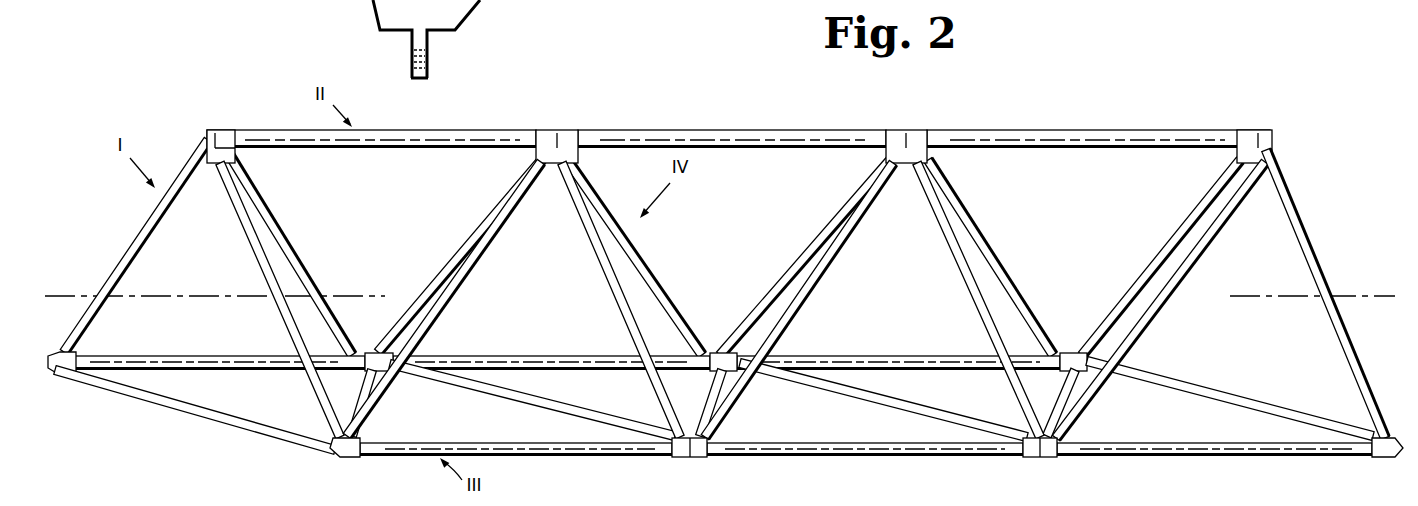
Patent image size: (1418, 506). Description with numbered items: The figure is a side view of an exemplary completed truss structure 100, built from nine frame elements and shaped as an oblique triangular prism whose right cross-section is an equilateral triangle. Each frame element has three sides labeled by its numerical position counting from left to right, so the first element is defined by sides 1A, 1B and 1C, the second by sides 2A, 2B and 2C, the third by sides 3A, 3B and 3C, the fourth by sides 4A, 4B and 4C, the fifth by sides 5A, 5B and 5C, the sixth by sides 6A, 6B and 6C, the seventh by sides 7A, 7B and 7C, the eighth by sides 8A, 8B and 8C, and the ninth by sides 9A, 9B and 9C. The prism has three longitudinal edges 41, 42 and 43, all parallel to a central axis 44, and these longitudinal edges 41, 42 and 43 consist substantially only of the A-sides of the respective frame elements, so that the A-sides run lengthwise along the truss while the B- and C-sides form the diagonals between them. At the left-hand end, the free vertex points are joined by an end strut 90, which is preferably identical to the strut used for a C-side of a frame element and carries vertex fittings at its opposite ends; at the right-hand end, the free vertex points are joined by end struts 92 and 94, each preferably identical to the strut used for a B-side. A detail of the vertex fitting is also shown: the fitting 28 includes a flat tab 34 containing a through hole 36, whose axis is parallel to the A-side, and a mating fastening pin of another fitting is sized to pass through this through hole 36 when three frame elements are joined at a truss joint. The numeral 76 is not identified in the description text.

The A-side of first frame element 1A is at (238, 356).
The B-side of first frame element 1B is at (135, 228).
The C-side of first frame element 1C is at (298, 246).
The A-side of second frame element 2A is at (395, 130).
The B-side of second frame element 2B is at (246, 245).
The C-side of second frame element 2C is at (470, 292).
The A-side of third frame element 3A is at (546, 456).
The B-side of third frame element 3B is at (357, 401).
The C-side of third frame element 3C is at (562, 408).
The A-side of fourth frame element 4A is at (558, 356).
The B-side of fourth frame element 4B is at (447, 266).
The C-side of fourth frame element 4C is at (652, 262).
The A-side of fifth frame element 5A is at (795, 130).
The B-side of fifth frame element 5B is at (607, 262).
The C-side of fifth frame element 5C is at (812, 304).
The A-side of sixth frame element 6A is at (858, 456).
The B-side of sixth frame element 6B is at (710, 400).
The C-side of sixth frame element 6C is at (905, 406).
The A-side of seventh frame element 7A is at (918, 356).
The B-side of seventh frame element 7B is at (818, 248).
The C-side of seventh frame element 7C is at (1008, 264).
The A-side of eighth frame element 8A is at (1080, 130).
The B-side of eighth frame element 8B is at (963, 284).
The C-side of eighth frame element 8C is at (1192, 264).
The A-side of ninth frame element 9A is at (1214, 456).
The B-side of ninth frame element 9B is at (1059, 399).
The C-side of ninth frame element 9C is at (1238, 396).
The longitudinal edge 41 is at (618, 356).
The longitudinal edge 42 is at (830, 130).
The longitudinal edge 43 is at (763, 456).
The central axis 44 is at (80, 296).
The end strut 90 is at (185, 410).
The end strut 92 is at (1162, 248).
The end strut 94 is at (1322, 254).
The completed truss structure 100 is at (956, 90).
The fitting 28 is at (466, 21).
The flat tab 34 is at (410, 74).
The through hole 36 is at (430, 57).
The fitting wall 76 is at (372, 3).